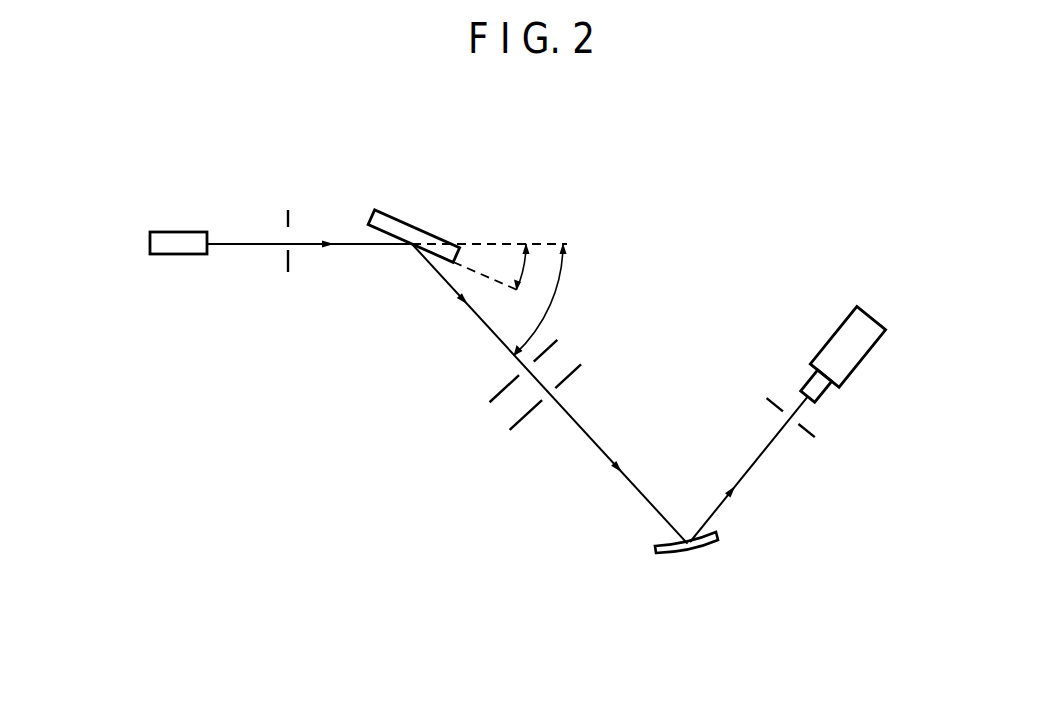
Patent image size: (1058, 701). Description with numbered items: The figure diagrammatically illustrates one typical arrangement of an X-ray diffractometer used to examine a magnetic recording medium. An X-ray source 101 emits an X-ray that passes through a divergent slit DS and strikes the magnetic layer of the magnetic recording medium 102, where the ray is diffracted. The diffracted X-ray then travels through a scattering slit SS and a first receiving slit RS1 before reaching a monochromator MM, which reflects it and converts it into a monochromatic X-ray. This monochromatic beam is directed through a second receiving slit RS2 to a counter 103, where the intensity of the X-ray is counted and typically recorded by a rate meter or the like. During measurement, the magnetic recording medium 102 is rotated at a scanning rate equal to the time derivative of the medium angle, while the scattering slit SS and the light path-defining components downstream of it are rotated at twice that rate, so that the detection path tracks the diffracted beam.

The X-ray source 101 is at (193, 232).
The magnetic recording medium 102 is at (423, 229).
The counter 103 is at (846, 312).
The divergent slit DS is at (290, 259).
The scattering slit SS is at (503, 381).
The receiving slit RS1 is at (526, 415).
The receiving slit RS2 is at (818, 434).
The monochromator MM is at (694, 553).